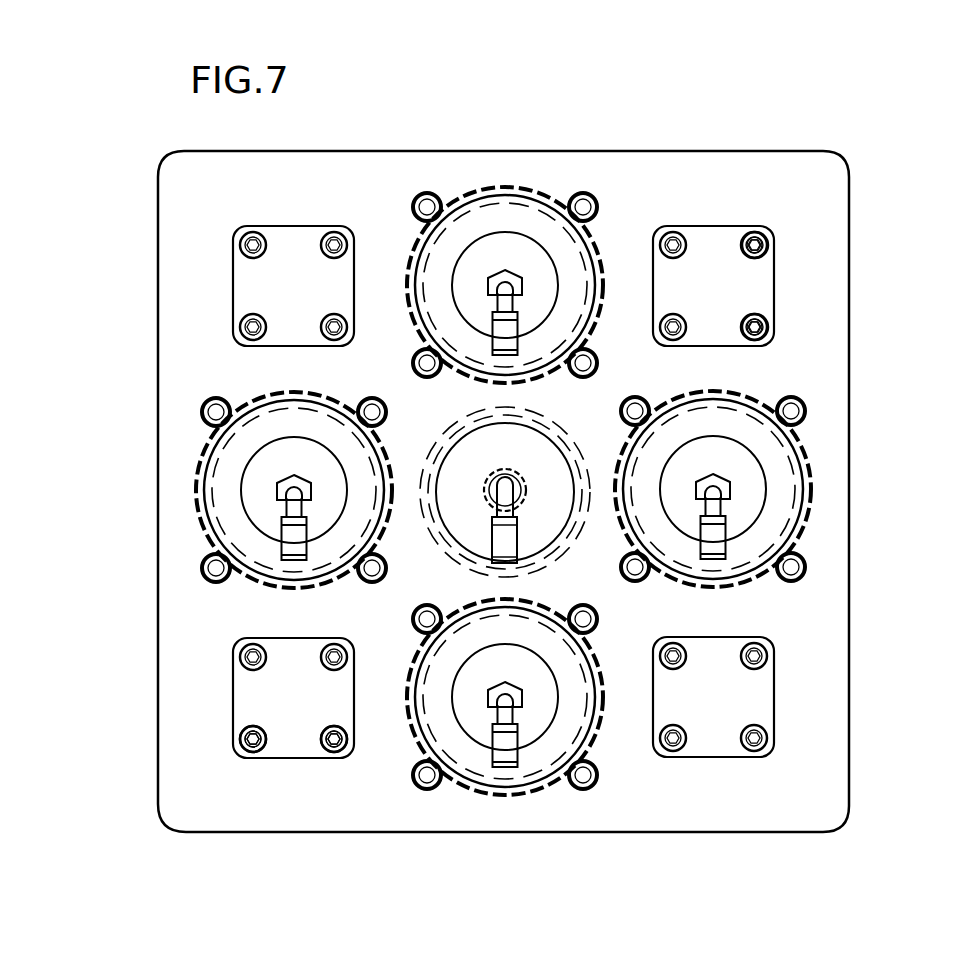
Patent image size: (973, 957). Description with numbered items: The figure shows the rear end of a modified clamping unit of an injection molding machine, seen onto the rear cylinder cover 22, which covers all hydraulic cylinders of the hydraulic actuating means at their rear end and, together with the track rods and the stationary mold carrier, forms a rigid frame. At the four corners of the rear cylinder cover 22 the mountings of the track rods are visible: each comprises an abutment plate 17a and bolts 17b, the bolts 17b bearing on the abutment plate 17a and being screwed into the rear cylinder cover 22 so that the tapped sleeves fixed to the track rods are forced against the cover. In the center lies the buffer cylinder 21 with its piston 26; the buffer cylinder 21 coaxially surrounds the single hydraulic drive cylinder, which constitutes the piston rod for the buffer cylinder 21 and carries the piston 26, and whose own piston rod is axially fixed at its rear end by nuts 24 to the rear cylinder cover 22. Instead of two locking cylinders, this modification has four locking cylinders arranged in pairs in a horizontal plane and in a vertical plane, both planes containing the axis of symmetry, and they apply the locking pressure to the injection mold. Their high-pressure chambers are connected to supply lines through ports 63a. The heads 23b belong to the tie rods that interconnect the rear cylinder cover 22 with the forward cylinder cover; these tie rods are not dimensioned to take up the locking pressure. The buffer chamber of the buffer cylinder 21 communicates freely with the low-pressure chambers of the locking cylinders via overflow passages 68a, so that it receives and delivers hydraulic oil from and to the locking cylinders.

The rear cylinder cover 22 is at (788, 190).
The abutment plates 17a is at (702, 258).
The bolts 17b is at (757, 326).
The heads 23b is at (583, 200).
The ports 63a is at (503, 743).
The buffer cylinder 21 is at (433, 540).
The piston 26 is at (460, 547).
The nuts 24 is at (517, 470).
The shaft 68a is at (517, 556).